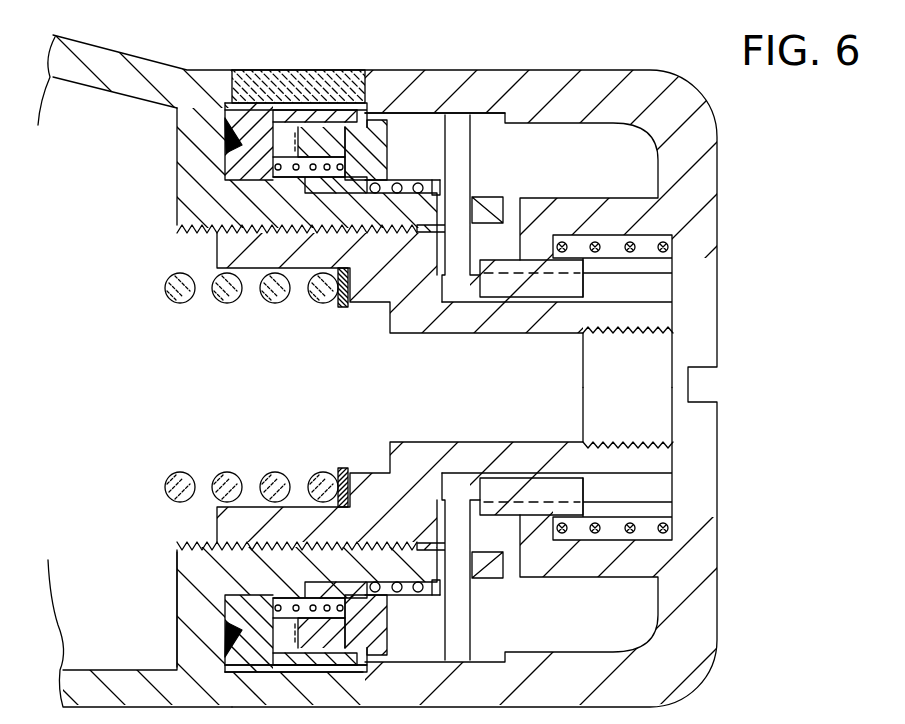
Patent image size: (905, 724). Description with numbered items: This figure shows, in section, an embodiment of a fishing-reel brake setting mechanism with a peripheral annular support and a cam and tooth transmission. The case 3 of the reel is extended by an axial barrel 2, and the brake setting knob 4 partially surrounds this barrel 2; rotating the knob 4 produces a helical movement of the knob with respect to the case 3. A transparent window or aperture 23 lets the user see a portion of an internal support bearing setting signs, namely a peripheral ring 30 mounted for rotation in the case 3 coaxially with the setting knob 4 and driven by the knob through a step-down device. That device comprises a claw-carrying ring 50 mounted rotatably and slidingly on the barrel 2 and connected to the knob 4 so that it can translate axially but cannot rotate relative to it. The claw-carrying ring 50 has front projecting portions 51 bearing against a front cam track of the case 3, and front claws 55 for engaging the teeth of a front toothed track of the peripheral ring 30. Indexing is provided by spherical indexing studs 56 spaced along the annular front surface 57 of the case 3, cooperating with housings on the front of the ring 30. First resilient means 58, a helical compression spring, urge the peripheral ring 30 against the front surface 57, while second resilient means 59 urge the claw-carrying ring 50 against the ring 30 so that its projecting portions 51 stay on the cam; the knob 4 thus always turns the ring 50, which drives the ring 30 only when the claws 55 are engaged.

The barrel 2 is at (180, 180).
The case 3 is at (166, 76).
The brake setting knob 4 is at (662, 88).
The transparent window or aperture 23 is at (364, 70).
The peripheral ring 30 is at (320, 138).
The claw-carrying ring 50 is at (370, 160).
The front projecting portions 51 is at (255, 227).
The front claws 55 is at (327, 70).
The spherical indexing studs 56 is at (282, 113).
The annular front surface 57 is at (227, 118).
The first resilient means 58 is at (275, 172).
The second resilient means 59 is at (440, 185).